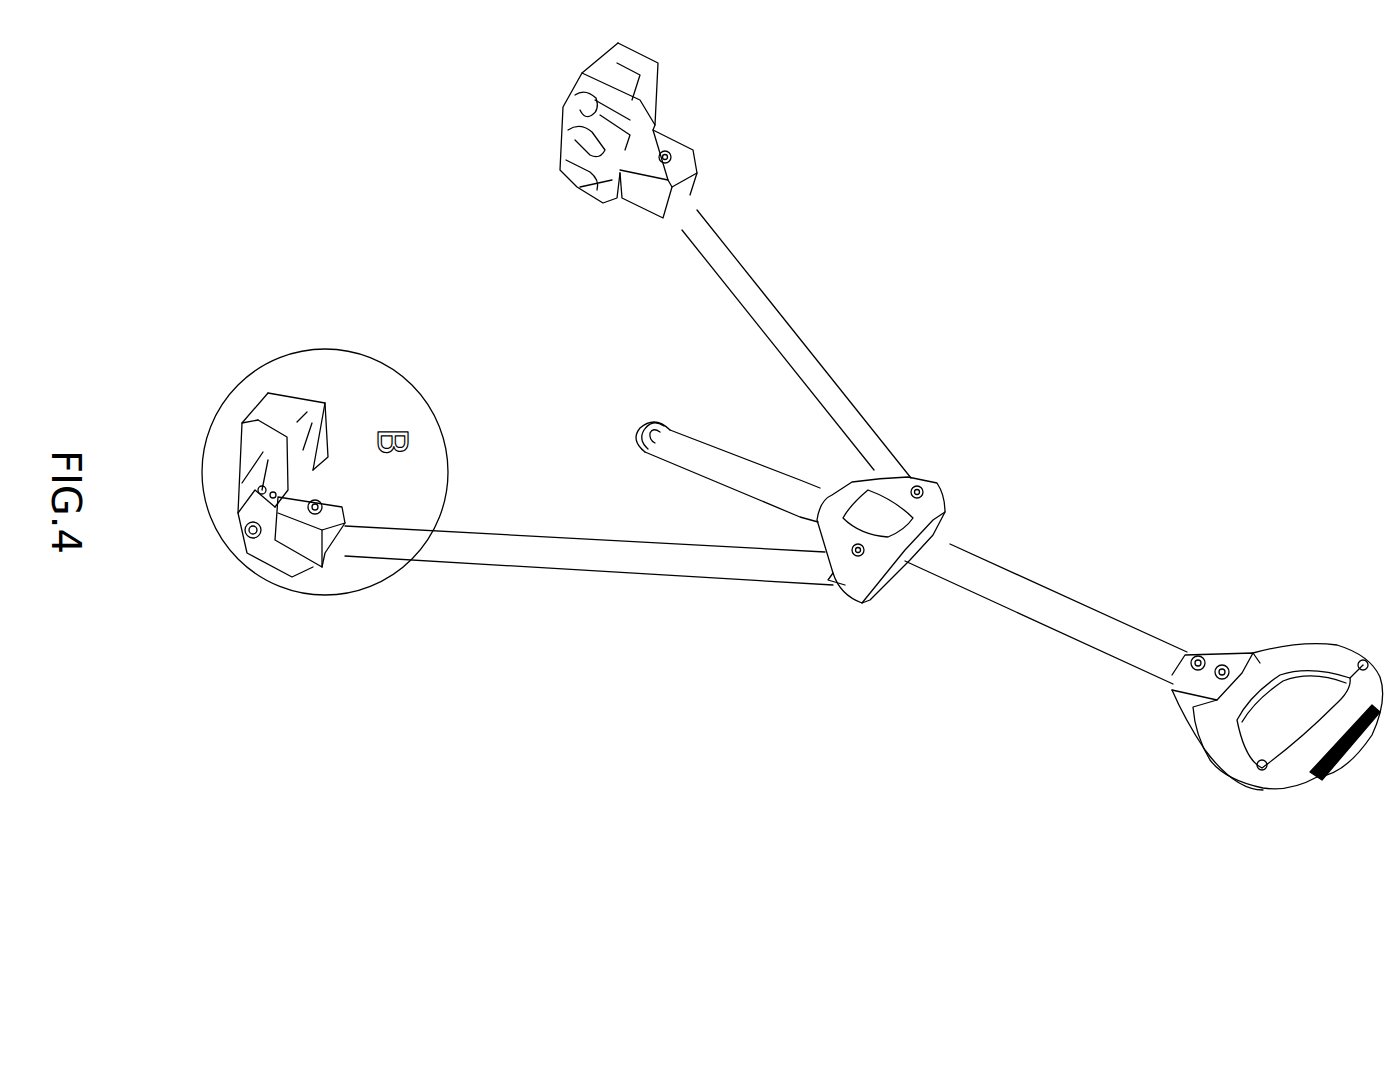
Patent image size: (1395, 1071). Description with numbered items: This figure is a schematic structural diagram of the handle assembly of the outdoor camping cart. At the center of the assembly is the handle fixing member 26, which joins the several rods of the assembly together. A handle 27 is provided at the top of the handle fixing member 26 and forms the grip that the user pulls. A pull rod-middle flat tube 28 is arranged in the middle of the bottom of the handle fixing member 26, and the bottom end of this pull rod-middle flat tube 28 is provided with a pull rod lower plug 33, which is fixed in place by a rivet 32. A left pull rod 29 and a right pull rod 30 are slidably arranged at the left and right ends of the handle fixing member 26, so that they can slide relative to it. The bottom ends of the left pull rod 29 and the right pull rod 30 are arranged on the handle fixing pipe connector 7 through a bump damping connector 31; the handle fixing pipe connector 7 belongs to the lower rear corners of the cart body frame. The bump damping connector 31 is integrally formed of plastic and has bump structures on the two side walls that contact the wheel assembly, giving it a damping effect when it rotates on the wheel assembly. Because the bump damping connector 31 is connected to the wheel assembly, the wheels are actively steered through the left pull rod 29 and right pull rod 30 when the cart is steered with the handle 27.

The handle fixing pipe connector 7 is at (251, 485).
The handle fixing member 26 is at (908, 482).
The handle 27 is at (1205, 765).
The pull rod-middle flat tube 28 is at (1030, 628).
The left pull rod 29 is at (795, 328).
The right pull rod 30 is at (645, 575).
The bump damping connector 31 is at (294, 578).
The rivet 32 is at (668, 430).
The pull rod lower plug 33 is at (645, 425).